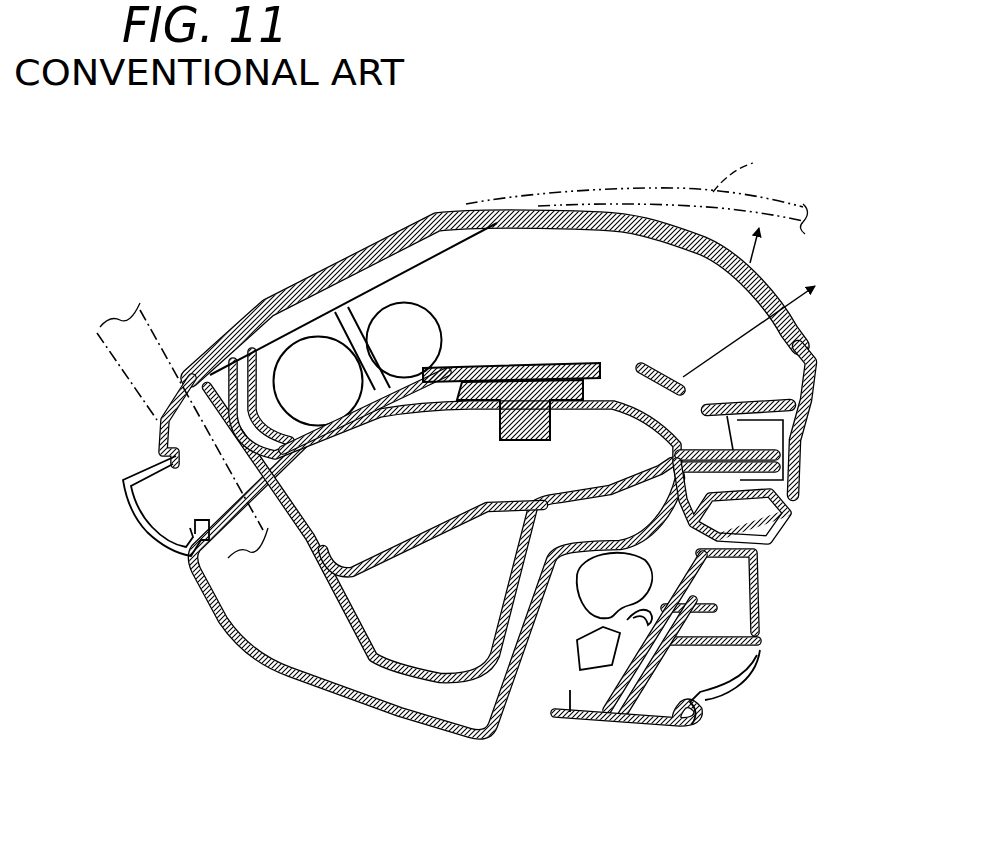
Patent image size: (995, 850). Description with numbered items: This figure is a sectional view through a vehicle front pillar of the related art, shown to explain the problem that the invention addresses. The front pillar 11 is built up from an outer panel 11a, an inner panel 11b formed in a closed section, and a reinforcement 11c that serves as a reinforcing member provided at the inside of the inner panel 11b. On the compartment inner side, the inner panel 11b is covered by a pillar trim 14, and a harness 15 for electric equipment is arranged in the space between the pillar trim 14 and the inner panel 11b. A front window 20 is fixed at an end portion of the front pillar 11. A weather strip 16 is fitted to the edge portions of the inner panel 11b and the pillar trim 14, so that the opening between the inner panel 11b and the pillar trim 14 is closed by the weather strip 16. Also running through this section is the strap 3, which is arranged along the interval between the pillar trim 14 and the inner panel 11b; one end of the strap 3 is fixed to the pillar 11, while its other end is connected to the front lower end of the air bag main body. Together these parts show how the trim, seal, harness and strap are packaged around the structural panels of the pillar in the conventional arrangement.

The front pillar 11 is at (280, 688).
The outer panel 11a is at (215, 606).
The inner panel 11b is at (622, 398).
The reinforcement 11c is at (433, 532).
The harness 15 is at (393, 333).
The strap 3 is at (660, 366).
The pillar trim 14 is at (713, 235).
The front window 20 is at (127, 367).
The weather strip 16 is at (796, 402).